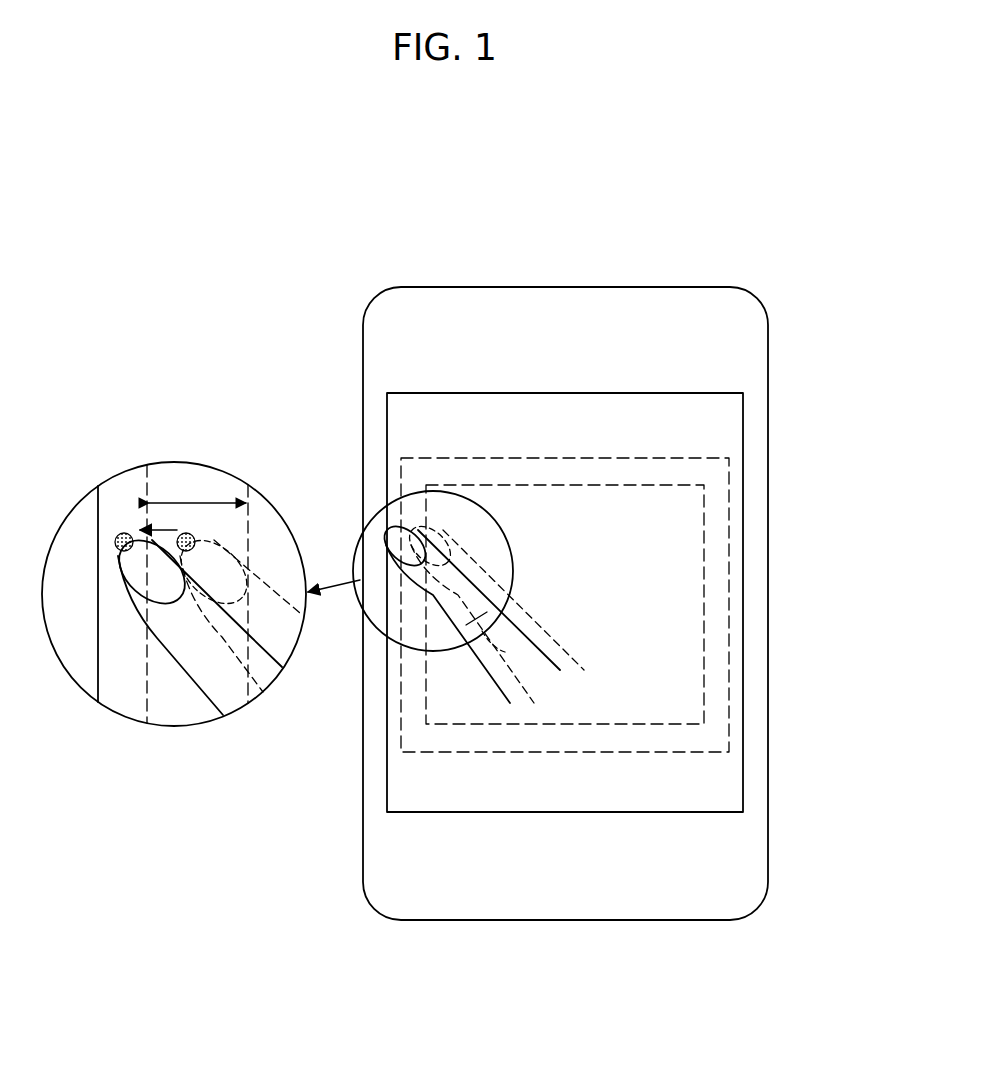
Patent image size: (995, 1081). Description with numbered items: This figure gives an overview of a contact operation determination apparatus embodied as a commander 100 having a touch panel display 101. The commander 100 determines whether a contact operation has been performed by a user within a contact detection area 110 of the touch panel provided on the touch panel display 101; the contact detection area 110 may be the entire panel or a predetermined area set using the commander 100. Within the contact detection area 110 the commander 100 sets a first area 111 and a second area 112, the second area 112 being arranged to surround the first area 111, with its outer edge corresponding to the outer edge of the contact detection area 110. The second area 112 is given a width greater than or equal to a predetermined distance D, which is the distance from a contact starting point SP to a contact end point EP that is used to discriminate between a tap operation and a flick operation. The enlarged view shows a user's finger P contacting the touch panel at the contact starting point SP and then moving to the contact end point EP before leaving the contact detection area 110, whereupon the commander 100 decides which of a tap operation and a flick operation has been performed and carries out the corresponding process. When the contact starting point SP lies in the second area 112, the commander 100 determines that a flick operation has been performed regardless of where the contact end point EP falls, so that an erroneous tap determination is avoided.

The commander 100 is at (650, 287).
The touch panel display 101 is at (743, 416).
The contact detection area 110 is at (729, 490).
The first area 111 is at (675, 544).
The second area 112 is at (716, 607).
The predetermined distance D is at (197, 490).
The contact end point EP is at (119, 537).
The contact starting point SP is at (197, 537).
The finger P is at (193, 680).